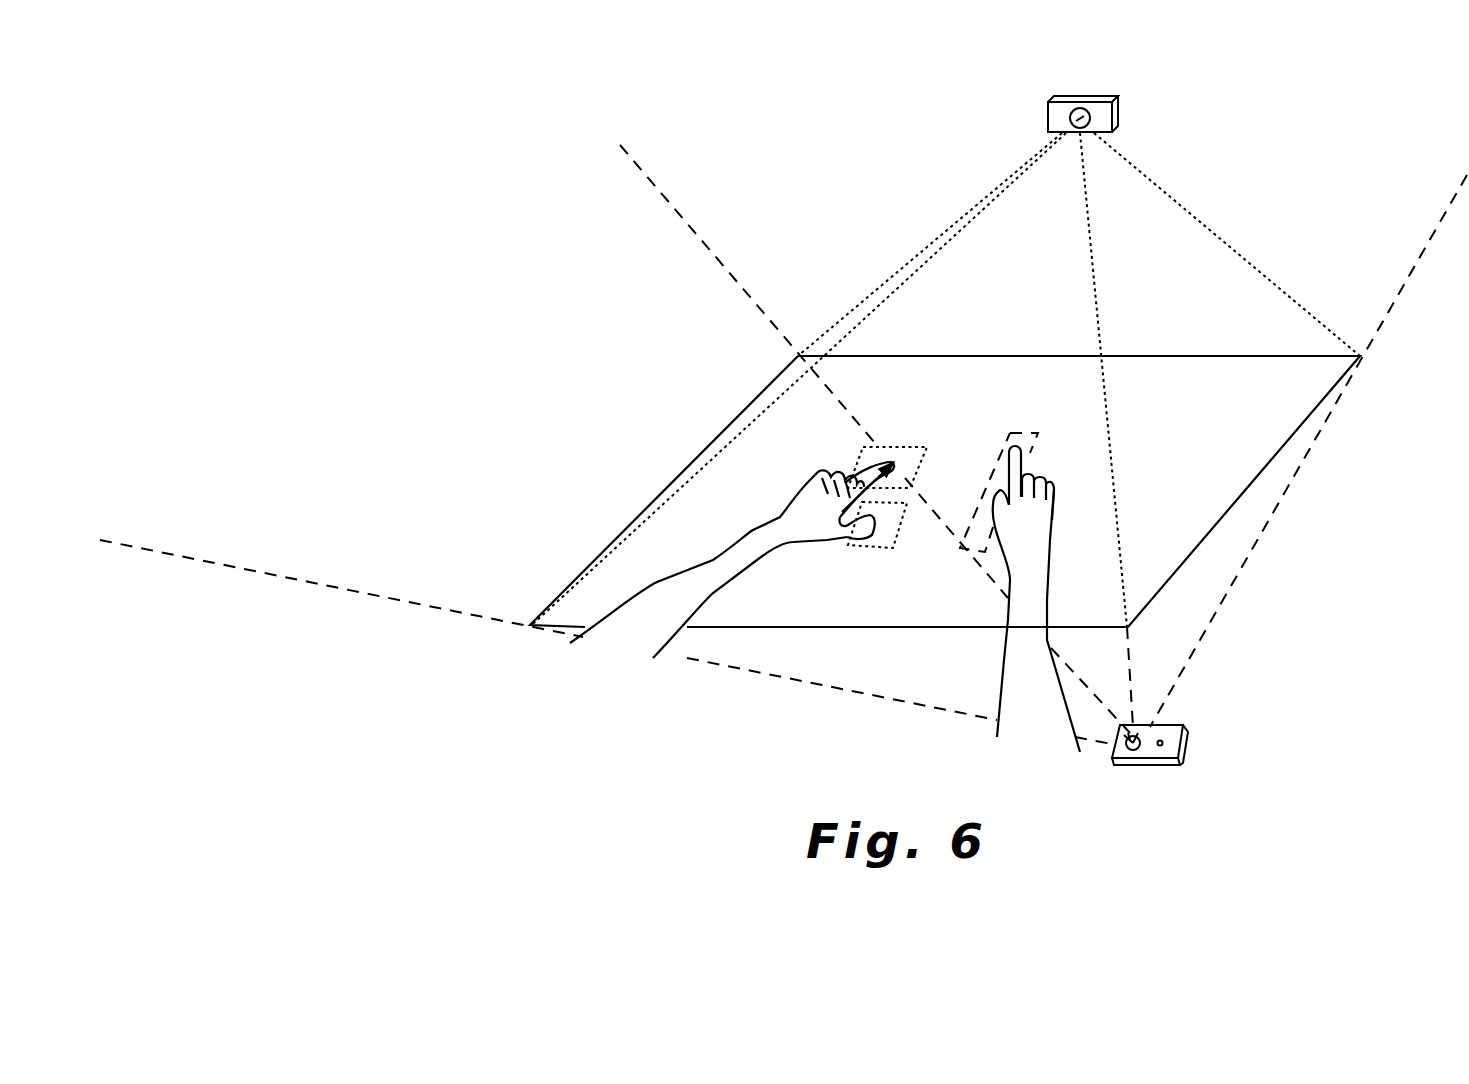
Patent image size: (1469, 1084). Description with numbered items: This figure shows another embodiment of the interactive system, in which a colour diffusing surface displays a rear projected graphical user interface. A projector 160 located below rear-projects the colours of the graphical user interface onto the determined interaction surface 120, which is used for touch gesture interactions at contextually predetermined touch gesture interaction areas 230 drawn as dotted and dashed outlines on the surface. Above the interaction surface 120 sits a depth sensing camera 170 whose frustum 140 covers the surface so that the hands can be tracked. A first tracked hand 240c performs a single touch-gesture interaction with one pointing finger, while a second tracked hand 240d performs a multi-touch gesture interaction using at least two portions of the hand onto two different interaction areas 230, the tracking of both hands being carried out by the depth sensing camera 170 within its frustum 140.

The interaction surface 120 is at (702, 453).
The frustum 140 is at (1167, 243).
The projector 160 is at (1186, 746).
The depth sensing camera 170 is at (1125, 101).
The touch gesture interaction areas 230 is at (960, 567).
The first tracked hand 240c is at (1043, 515).
The second tracked hand 240d is at (820, 510).